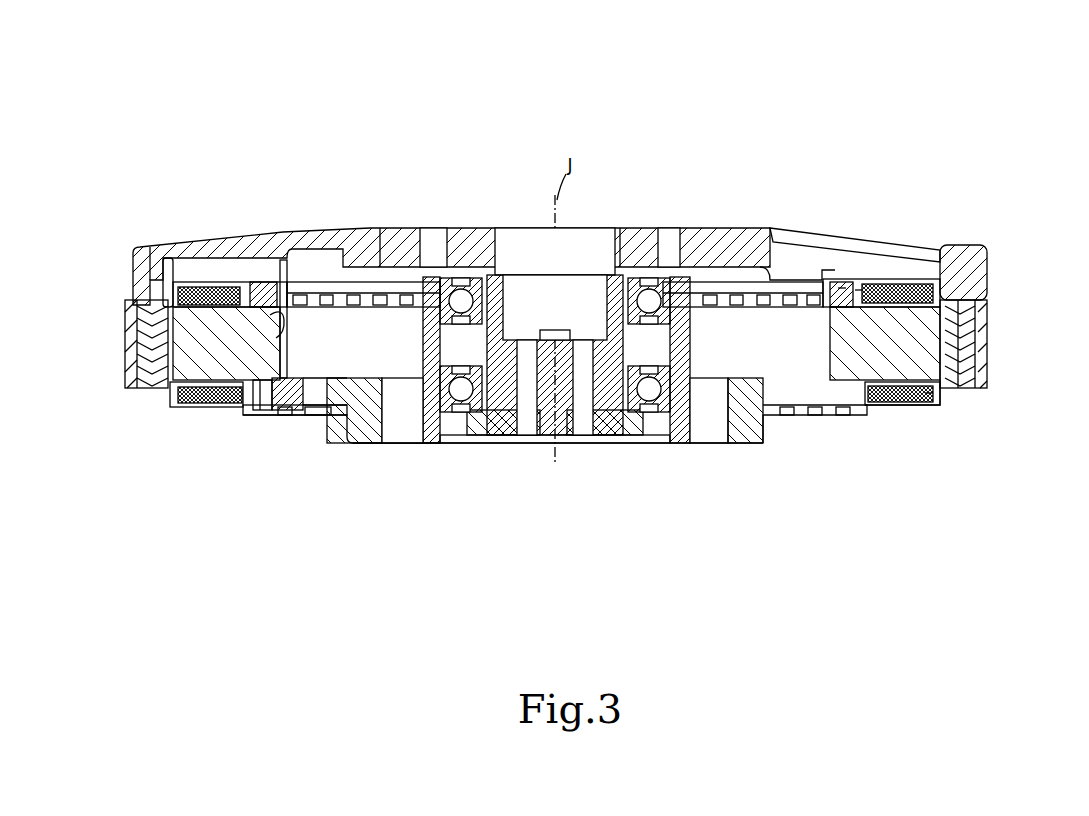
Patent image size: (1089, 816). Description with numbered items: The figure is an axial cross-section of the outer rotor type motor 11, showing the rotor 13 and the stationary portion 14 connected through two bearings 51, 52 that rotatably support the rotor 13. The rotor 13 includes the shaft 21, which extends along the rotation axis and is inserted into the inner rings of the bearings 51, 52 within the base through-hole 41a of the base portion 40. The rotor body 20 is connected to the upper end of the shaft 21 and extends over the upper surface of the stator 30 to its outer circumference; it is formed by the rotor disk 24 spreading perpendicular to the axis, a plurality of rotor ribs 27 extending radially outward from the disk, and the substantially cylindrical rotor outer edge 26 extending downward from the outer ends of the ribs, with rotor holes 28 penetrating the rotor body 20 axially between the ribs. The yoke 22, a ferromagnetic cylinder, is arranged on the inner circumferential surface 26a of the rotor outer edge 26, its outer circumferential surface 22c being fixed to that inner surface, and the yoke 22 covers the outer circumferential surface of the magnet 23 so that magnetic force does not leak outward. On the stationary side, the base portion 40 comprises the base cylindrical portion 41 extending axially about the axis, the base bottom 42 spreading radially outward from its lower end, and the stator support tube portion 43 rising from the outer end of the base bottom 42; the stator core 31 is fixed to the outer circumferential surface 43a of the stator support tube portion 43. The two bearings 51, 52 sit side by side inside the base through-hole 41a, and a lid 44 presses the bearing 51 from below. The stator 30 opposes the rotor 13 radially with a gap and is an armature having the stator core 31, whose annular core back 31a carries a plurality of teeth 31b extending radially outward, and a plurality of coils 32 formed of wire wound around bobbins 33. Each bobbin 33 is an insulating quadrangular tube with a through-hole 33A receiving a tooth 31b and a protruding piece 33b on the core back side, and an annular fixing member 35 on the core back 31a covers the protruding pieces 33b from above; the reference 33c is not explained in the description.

The motor 11 is at (975, 112).
The rotor 13 is at (748, 200).
The stationary portion 14 is at (800, 455).
The rotor body 20 is at (973, 243).
The shaft 21 is at (503, 440).
The yoke 22 is at (972, 316).
The outer circumferential surface of the yoke cylindrical portion 22c is at (140, 345).
The magnet 23 is at (965, 355).
The rotor disk 24 is at (712, 235).
The rotor outer edge 26 is at (990, 268).
The inner circumferential surface of the rotor outer edge 26a is at (140, 318).
The rotor rib 27 is at (278, 248).
The rotor hole 28 is at (900, 235).
The stator 30 is at (900, 410).
The stator core 31 is at (283, 490).
The core back 31a is at (268, 412).
The teeth 31b is at (200, 407).
The coil 32 is at (190, 405).
The bobbin 33 is at (178, 400).
The through-hole 33A is at (925, 394).
The protruding piece 33b is at (855, 290).
The magnet portion 33c is at (838, 285).
The fixing member 35 is at (842, 285).
The base portion 40 is at (748, 448).
The base cylindrical portion 41 is at (690, 400).
The base through-hole 41a is at (462, 427).
The base bottom 42 is at (372, 445).
The stator support tube portion 43 is at (295, 380).
The outer circumferential surface of the stator support tube portion 43a is at (287, 320).
The lid 44 is at (590, 437).
The bearing 51 is at (650, 418).
The bearing 52 is at (619, 435).